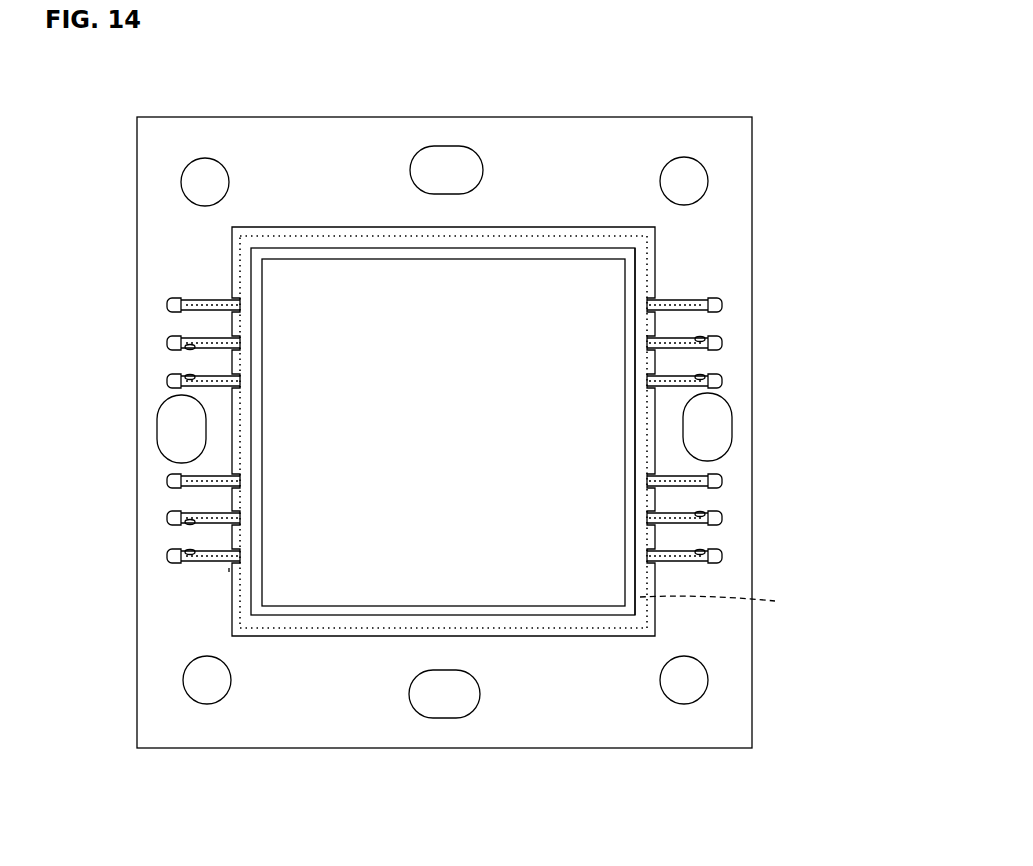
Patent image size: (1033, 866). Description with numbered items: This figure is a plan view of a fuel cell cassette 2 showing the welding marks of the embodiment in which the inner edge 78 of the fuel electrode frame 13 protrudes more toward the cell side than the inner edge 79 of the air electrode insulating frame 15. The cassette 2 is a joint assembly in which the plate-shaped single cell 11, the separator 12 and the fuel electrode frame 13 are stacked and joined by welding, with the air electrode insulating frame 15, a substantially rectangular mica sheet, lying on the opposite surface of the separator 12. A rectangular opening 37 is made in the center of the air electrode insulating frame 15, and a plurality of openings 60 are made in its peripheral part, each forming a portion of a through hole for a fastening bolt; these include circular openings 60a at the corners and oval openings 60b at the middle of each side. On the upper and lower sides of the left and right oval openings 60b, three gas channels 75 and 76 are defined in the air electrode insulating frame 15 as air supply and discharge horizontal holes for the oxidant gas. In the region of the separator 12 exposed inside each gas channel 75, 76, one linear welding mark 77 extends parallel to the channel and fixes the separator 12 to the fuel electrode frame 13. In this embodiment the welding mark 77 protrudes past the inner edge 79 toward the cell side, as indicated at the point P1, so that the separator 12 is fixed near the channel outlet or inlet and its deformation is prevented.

The fuel cell cassette 2 is at (465, 434).
The air electrode insulating frame 15 is at (153, 190).
The separator 12 is at (237, 245).
The single cell 11 is at (282, 283).
The fuel electrode frame 13 is at (628, 578).
The opening 37 is at (355, 238).
The inner edge of the air electrode insulating frame 79 is at (645, 268).
The welding mark 77 is at (205, 299).
The gas channel 75 is at (188, 338).
The gas channel 76 is at (700, 340).
The inner edge of the fuel electrode frame 78 is at (721, 607).
The opening 60 is at (705, 178).
The circular opening 60a is at (195, 178).
The oval opening 60b is at (450, 150).
The reference point P1 is at (229, 568).